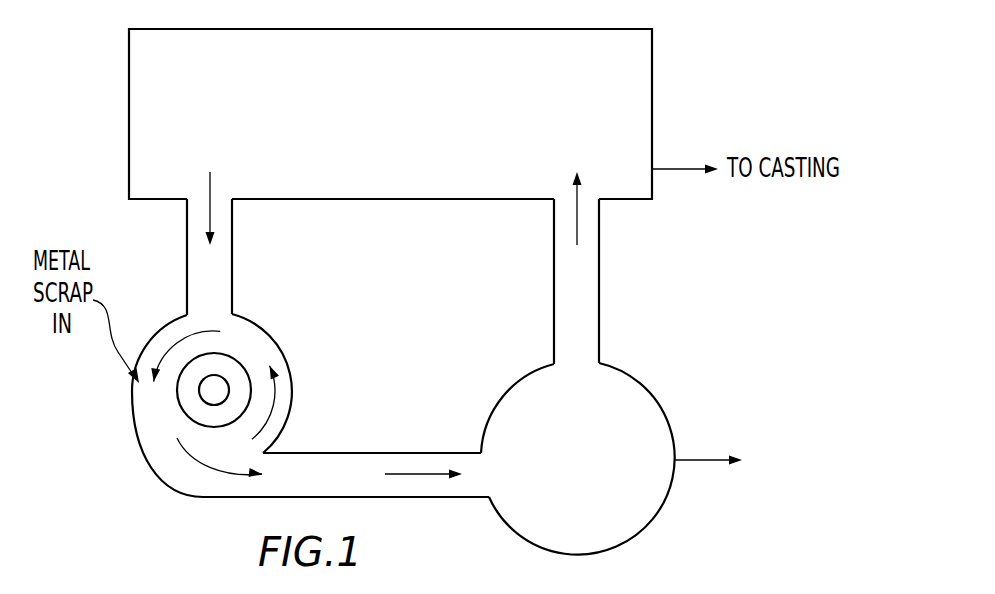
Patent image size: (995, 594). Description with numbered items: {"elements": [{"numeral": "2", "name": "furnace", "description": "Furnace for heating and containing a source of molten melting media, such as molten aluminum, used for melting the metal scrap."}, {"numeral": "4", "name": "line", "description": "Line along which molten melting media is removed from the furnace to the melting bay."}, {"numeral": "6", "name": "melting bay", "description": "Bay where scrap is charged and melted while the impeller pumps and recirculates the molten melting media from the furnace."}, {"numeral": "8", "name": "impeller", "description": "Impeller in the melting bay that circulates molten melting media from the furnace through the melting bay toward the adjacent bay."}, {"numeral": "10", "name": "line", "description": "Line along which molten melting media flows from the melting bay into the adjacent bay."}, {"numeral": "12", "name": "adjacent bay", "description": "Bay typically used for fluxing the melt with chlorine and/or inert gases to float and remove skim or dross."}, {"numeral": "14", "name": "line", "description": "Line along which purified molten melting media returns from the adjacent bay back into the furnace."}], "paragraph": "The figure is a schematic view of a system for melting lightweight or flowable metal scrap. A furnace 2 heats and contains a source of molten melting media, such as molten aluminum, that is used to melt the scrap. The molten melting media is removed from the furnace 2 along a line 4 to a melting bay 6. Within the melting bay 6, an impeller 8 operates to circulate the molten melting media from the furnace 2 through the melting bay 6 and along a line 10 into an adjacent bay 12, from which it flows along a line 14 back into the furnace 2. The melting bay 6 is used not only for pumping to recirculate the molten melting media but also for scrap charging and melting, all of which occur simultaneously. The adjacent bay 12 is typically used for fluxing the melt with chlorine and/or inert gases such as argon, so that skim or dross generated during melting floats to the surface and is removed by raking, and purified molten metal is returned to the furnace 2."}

The holding furnace 2 is at (129, 88).
The inlet passage 4 is at (187, 262).
The vortex melting chamber 6 is at (131, 413).
The central vortex well 8 is at (237, 373).
The transfer channel 10 is at (388, 453).
The skim well 12 is at (500, 520).
The return passage 14 is at (600, 285).